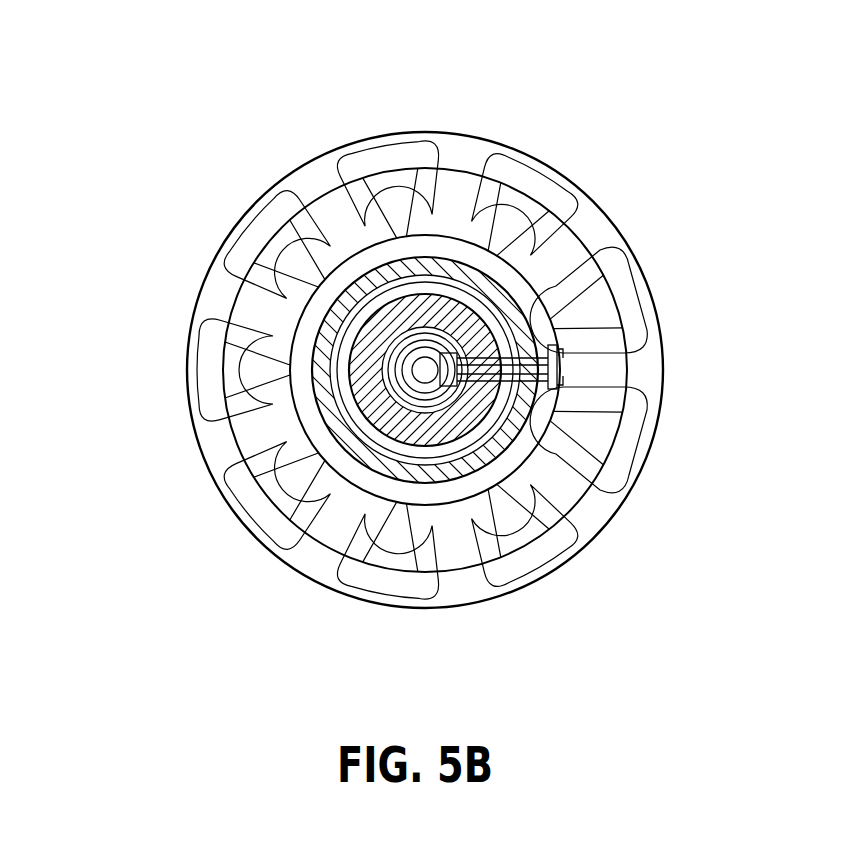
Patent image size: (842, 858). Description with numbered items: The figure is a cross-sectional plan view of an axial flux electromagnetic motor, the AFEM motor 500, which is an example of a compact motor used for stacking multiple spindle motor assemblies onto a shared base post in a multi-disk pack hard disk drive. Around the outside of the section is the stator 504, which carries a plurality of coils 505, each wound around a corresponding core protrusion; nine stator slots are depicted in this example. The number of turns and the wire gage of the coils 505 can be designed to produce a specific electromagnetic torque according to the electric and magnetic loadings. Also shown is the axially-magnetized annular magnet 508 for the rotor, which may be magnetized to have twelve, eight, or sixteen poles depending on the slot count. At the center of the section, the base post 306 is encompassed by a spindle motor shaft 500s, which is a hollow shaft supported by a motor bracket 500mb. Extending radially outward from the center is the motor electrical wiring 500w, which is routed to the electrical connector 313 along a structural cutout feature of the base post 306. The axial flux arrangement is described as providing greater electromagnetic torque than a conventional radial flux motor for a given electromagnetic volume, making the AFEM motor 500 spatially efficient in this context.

The AFEM motor 500 is at (146, 140).
The motor bracket 500mb is at (438, 262).
The electrical connector 313 is at (503, 293).
The motor electrical wiring 500w is at (556, 365).
The axially-magnetized annular magnet 508 is at (620, 370).
The coils 505 is at (628, 448).
The stator 504 is at (590, 514).
The base post 306 is at (417, 372).
The spindle motor shaft 500s is at (433, 403).